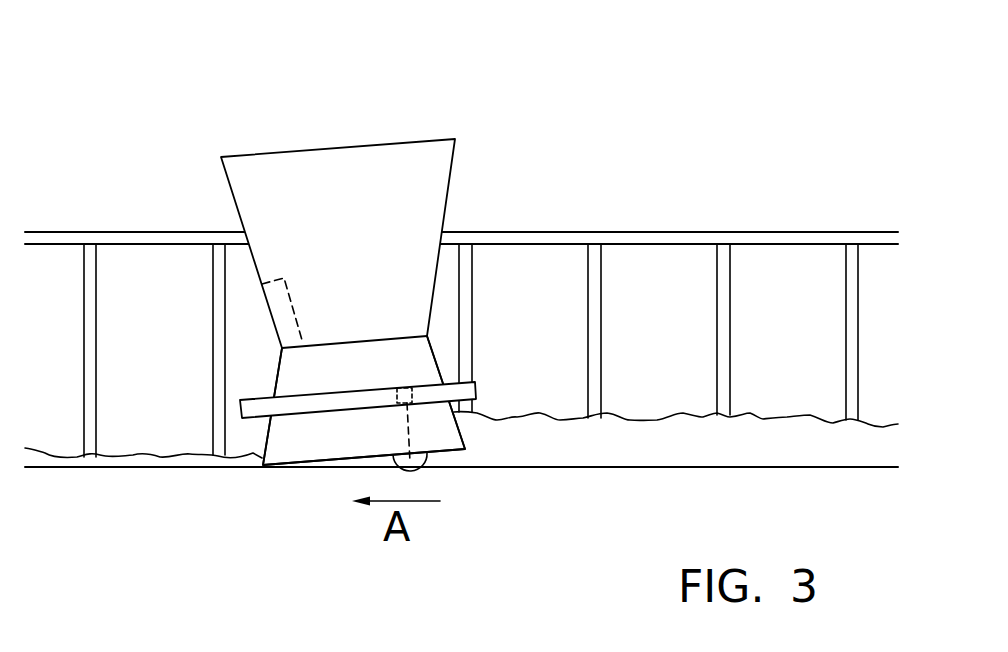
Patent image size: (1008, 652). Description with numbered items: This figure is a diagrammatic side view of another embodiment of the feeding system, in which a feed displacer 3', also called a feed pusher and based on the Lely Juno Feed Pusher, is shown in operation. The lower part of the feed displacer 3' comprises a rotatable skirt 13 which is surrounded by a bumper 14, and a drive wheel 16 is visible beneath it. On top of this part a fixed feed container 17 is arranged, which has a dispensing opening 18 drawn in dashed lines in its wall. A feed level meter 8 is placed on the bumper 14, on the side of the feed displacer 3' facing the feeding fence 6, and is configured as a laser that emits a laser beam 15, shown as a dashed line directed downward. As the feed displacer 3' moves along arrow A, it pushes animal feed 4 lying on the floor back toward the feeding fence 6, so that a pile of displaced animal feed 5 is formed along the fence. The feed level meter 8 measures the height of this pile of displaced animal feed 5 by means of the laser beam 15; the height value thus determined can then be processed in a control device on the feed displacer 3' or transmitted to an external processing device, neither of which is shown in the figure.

The feed displacer 3' is at (378, 322).
The animal feed 4 is at (133, 461).
The displaced animal feed 5 is at (701, 456).
The feeding fence 6 is at (652, 237).
The feed level meter 8 is at (405, 395).
The rotatable skirt 13 is at (315, 437).
The bumper 14 is at (292, 405).
The laser beam 15 is at (407, 430).
The drive wheel 16 is at (418, 458).
The fixed feed container 17 is at (350, 192).
The dispensing opening 18 is at (286, 315).